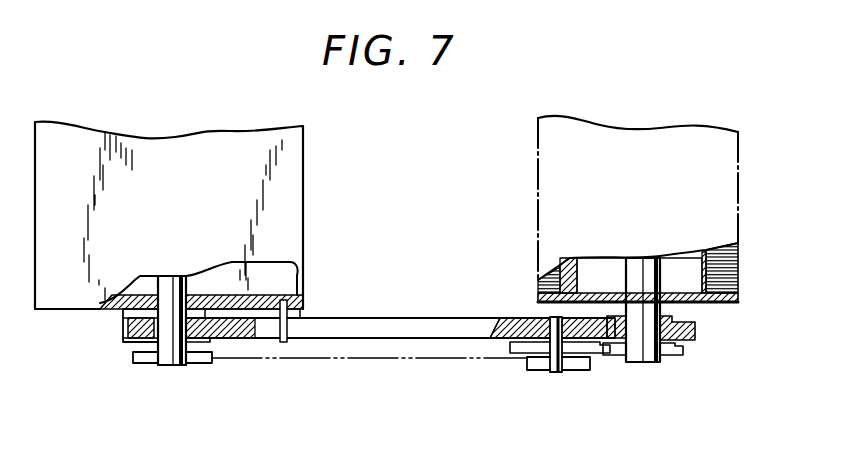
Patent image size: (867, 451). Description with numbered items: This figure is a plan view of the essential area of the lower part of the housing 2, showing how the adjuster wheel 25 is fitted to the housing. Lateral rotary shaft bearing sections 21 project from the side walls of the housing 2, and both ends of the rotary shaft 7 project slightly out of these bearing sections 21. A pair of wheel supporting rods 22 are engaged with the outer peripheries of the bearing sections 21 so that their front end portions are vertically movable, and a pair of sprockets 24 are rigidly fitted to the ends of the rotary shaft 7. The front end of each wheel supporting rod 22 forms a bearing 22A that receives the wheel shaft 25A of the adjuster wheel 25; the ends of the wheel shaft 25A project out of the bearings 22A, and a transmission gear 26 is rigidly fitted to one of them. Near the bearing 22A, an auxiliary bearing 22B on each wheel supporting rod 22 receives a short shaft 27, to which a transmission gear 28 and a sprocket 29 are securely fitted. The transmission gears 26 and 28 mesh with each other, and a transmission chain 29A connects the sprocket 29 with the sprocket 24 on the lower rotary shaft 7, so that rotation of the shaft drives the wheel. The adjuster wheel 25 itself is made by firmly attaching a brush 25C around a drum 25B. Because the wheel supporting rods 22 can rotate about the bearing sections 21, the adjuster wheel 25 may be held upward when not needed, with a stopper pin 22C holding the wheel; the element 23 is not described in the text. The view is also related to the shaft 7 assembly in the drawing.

The housing 2 is at (47, 302).
The rotary shaft 7 is at (168, 367).
The rotary shaft bearing section 21 is at (122, 322).
The wheel supporting rod 22 is at (378, 318).
The bearing 22A is at (697, 319).
The auxiliary bearing 22B is at (548, 318).
The stopper pin 22C is at (284, 343).
The spacer block 23 is at (133, 342).
The sprocket 24 is at (200, 364).
The adjuster wheel 25 is at (533, 190).
The wheel shaft 25A is at (645, 363).
The drum 25B is at (700, 304).
The brush 25C is at (740, 270).
The transmission gear 26 is at (673, 356).
The short shaft 27 is at (556, 372).
The transmission gear 28 is at (594, 356).
The sprocket 29 is at (535, 370).
The transmission chain 29A is at (422, 359).